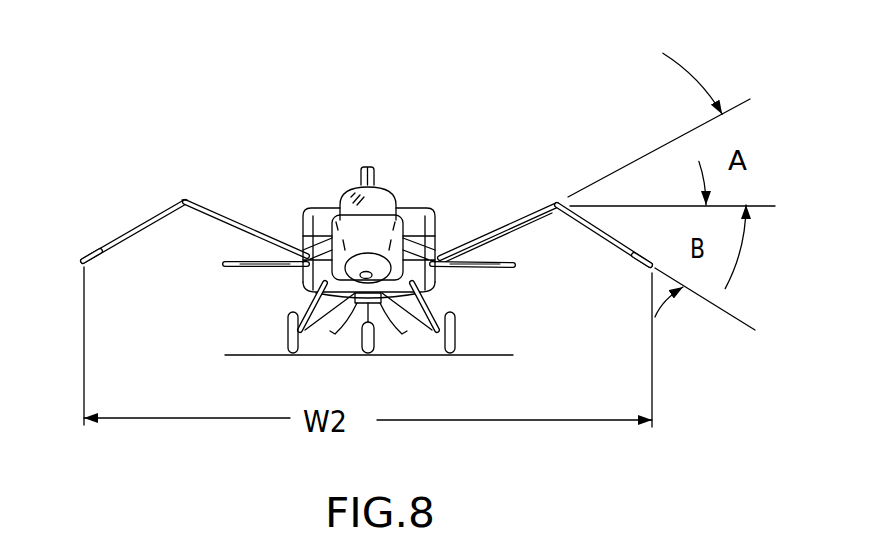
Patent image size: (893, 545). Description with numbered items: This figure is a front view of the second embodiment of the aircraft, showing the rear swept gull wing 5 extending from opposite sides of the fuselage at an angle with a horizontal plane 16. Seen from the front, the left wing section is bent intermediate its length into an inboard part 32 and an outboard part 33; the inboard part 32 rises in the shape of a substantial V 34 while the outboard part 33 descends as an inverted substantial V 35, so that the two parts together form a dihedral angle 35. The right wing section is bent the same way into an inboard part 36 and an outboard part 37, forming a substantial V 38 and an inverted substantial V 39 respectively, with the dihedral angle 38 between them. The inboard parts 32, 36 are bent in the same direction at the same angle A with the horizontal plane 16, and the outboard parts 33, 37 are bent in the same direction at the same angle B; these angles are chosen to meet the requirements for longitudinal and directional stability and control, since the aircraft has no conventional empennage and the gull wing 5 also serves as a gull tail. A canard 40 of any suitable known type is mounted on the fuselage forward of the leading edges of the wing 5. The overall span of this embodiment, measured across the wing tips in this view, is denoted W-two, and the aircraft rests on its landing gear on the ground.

The wing 5 is at (200, 207).
The horizontal plane 16 is at (483, 352).
The inboard part 32 is at (192, 228).
The outboard part 33 is at (118, 238).
The substantial V 34 is at (293, 234).
The inverted substantial V 35 is at (203, 247).
The inboard part 36 is at (545, 219).
The outboard part 37 is at (630, 259).
The substantial V 38 is at (479, 236).
The inverted substantial V 39 is at (578, 250).
The canard 40 is at (485, 268).